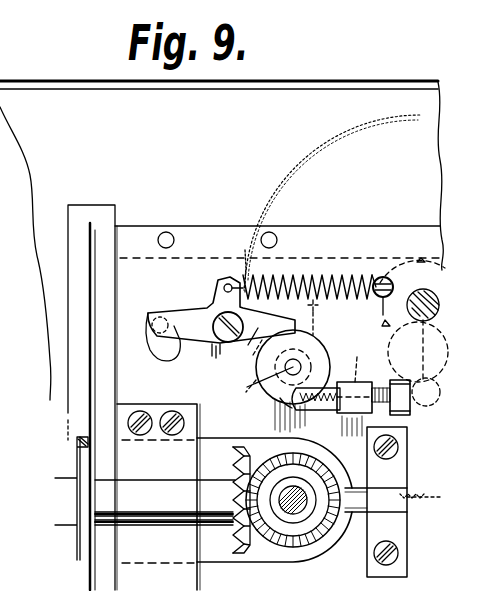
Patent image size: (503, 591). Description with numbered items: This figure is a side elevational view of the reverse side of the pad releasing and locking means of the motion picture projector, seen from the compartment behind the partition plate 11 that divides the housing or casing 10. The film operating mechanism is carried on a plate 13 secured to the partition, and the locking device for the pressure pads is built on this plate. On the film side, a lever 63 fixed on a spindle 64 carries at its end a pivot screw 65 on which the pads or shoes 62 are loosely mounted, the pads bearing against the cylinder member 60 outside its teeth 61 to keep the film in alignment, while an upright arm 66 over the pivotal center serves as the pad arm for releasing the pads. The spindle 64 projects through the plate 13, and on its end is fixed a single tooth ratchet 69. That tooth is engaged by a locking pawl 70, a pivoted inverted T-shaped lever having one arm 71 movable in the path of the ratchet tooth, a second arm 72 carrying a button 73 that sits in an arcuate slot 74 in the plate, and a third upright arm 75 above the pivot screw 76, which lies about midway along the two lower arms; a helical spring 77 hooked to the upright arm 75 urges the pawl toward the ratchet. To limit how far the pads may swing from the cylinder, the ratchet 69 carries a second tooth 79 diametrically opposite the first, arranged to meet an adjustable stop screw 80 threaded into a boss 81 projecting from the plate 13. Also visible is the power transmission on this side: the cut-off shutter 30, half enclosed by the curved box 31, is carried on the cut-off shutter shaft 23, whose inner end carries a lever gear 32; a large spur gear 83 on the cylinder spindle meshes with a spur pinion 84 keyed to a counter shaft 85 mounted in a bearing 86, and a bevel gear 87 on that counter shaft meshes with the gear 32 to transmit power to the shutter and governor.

The housing or casing 10 is at (373, 78).
The partition plate 11 is at (240, 142).
The plate 13 is at (198, 230).
The cut-off shutter shaft 23 is at (158, 489).
The cut-off shutter 30 is at (88, 238).
The curved box 31 is at (112, 212).
The lever gear 32 is at (232, 460).
The cylinder member 60 is at (395, 258).
The teeth 61 is at (379, 254).
The pads or shoes 62 is at (411, 410).
The lever 63 is at (400, 353).
The spindle 64 is at (247, 387).
The pivot screw 65 is at (426, 321).
The upright arm 66 is at (324, 317).
The single tooth ratchet 69 is at (320, 344).
The locking pawl 70 is at (206, 303).
The arm 71 is at (249, 346).
The second arm 72 is at (184, 312).
The button 73 is at (151, 326).
The arcuate slot 74 is at (164, 358).
The third upright arm 75 is at (226, 279).
The pivot screw 76 is at (207, 358).
The helical spring 77 is at (313, 275).
The second tooth 79 is at (282, 402).
The adjustable stop screw 80 is at (295, 442).
The boss 81 is at (341, 375).
The large spur gear 83 is at (425, 503).
The spur pinion 84 is at (294, 522).
The counter shaft 85 is at (285, 518).
The bearing 86 is at (374, 488).
The bevel gear 87 is at (316, 553).